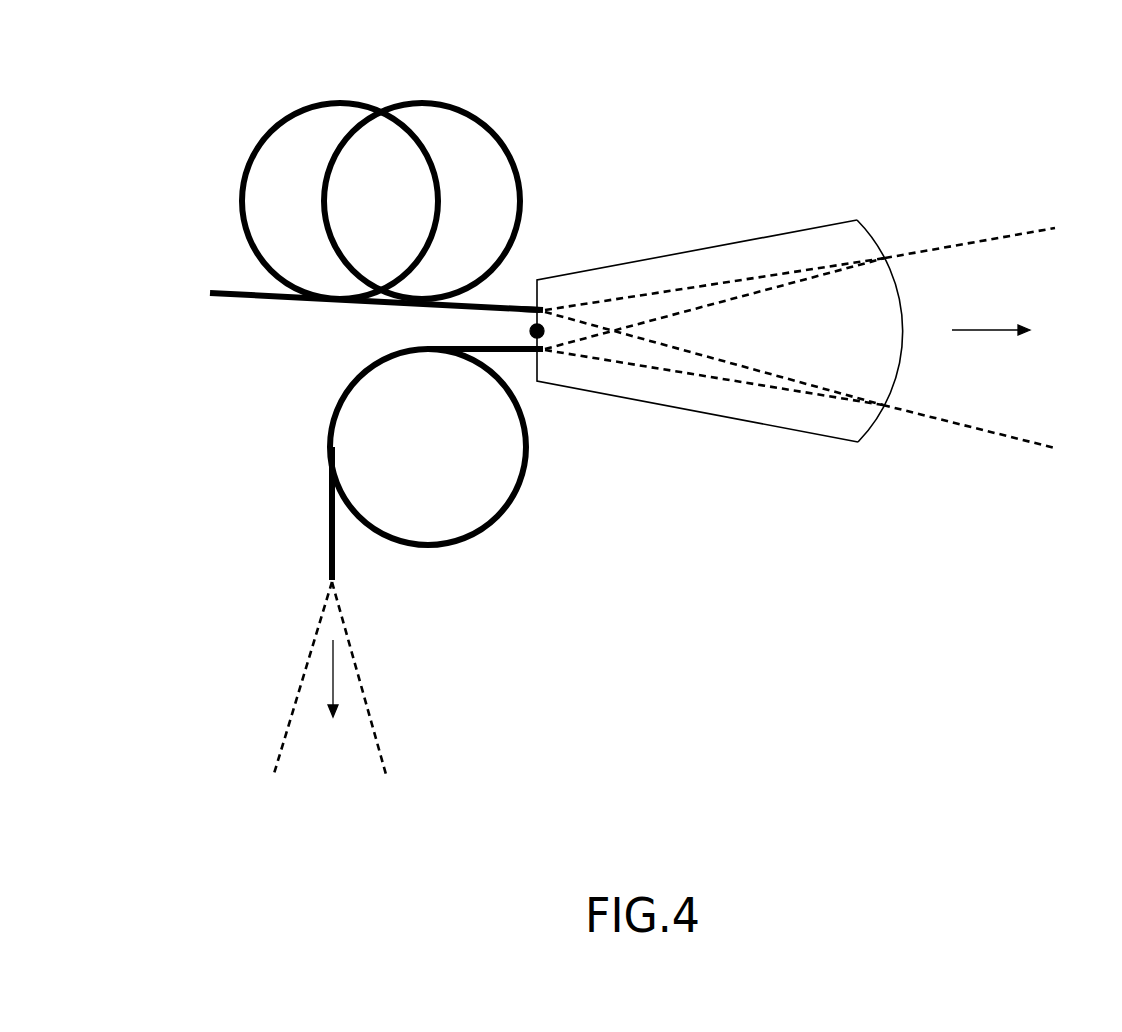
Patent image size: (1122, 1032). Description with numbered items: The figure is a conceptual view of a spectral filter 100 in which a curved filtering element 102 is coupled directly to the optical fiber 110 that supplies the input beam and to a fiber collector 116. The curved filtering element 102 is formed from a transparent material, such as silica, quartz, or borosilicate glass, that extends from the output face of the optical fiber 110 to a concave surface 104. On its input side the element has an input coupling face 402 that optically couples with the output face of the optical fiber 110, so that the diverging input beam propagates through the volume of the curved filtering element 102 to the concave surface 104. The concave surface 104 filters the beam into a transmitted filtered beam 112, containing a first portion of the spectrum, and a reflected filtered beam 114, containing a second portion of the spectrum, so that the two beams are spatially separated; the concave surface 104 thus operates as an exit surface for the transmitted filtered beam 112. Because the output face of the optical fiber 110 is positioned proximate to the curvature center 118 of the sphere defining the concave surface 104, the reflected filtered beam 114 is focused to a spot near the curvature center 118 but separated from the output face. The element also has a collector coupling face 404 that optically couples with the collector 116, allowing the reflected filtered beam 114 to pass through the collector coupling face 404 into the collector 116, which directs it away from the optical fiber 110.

The spectral filter 100 is at (148, 45).
The optical fiber 110 is at (481, 106).
The collector 116 is at (513, 530).
The curvature center 118 is at (533, 331).
The input coupling face 402 is at (538, 273).
The collector coupling face 404 is at (540, 393).
The curved filtering element 102 is at (722, 243).
The concave surface 104 is at (873, 425).
The transmitted filtered beam 112 is at (992, 268).
The reflected filtered beam 114 is at (345, 688).